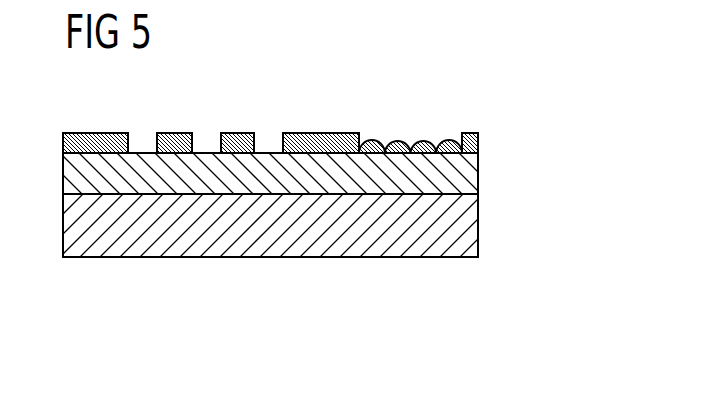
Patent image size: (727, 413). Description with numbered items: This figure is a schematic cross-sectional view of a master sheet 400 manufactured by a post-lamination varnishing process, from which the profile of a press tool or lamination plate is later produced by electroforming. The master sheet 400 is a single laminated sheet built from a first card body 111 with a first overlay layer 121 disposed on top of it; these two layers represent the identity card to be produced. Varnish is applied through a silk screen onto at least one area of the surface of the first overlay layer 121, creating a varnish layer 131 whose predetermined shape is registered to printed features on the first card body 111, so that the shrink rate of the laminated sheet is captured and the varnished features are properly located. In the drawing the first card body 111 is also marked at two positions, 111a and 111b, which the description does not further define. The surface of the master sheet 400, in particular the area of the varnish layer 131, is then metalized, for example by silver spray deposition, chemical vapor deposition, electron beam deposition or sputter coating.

The master sheet 400 is at (470, 112).
The first card body 111 is at (465, 233).
The first surface region of substrate 111a is at (207, 198).
The second surface region of substrate 111b is at (398, 198).
The first overlay layer 121 is at (460, 175).
The varnish layer 131 is at (478, 137).